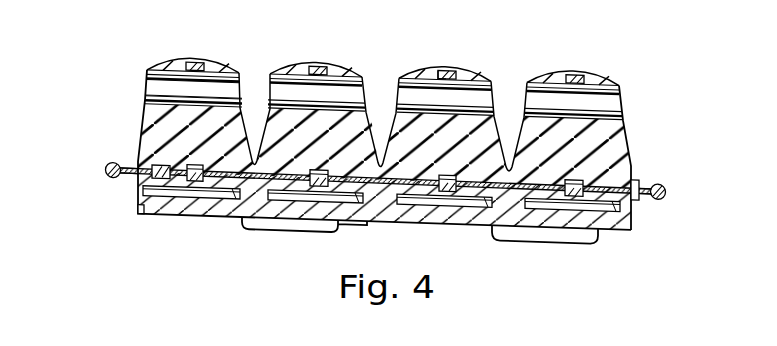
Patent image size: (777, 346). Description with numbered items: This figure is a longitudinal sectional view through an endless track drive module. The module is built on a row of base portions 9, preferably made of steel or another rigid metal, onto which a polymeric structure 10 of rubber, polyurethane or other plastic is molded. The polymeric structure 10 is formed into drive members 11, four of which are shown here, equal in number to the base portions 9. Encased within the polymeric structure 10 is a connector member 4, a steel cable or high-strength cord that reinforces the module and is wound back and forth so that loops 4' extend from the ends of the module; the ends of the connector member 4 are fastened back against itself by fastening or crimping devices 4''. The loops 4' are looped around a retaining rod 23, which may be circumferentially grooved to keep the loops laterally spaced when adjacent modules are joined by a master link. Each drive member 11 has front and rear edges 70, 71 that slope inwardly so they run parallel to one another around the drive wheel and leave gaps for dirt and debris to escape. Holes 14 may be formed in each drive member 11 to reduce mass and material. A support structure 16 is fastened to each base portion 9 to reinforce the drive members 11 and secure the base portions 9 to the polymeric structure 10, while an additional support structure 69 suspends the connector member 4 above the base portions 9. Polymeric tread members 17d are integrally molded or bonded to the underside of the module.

The connector member 4 is at (385, 224).
The loops 4' is at (376, 175).
The fastening or crimping devices 4'' is at (392, 210).
The base portions 9 is at (598, 243).
The polymeric structure 10 is at (137, 158).
The drive members 11 is at (575, 70).
The holes 14 is at (160, 92).
The support structure 16 is at (446, 66).
The polymeric tread members 17d is at (236, 220).
The retaining rod 23 is at (668, 194).
The additional support structure 69 is at (603, 180).
The front edge 70 is at (512, 128).
The rear edge 71 is at (620, 156).